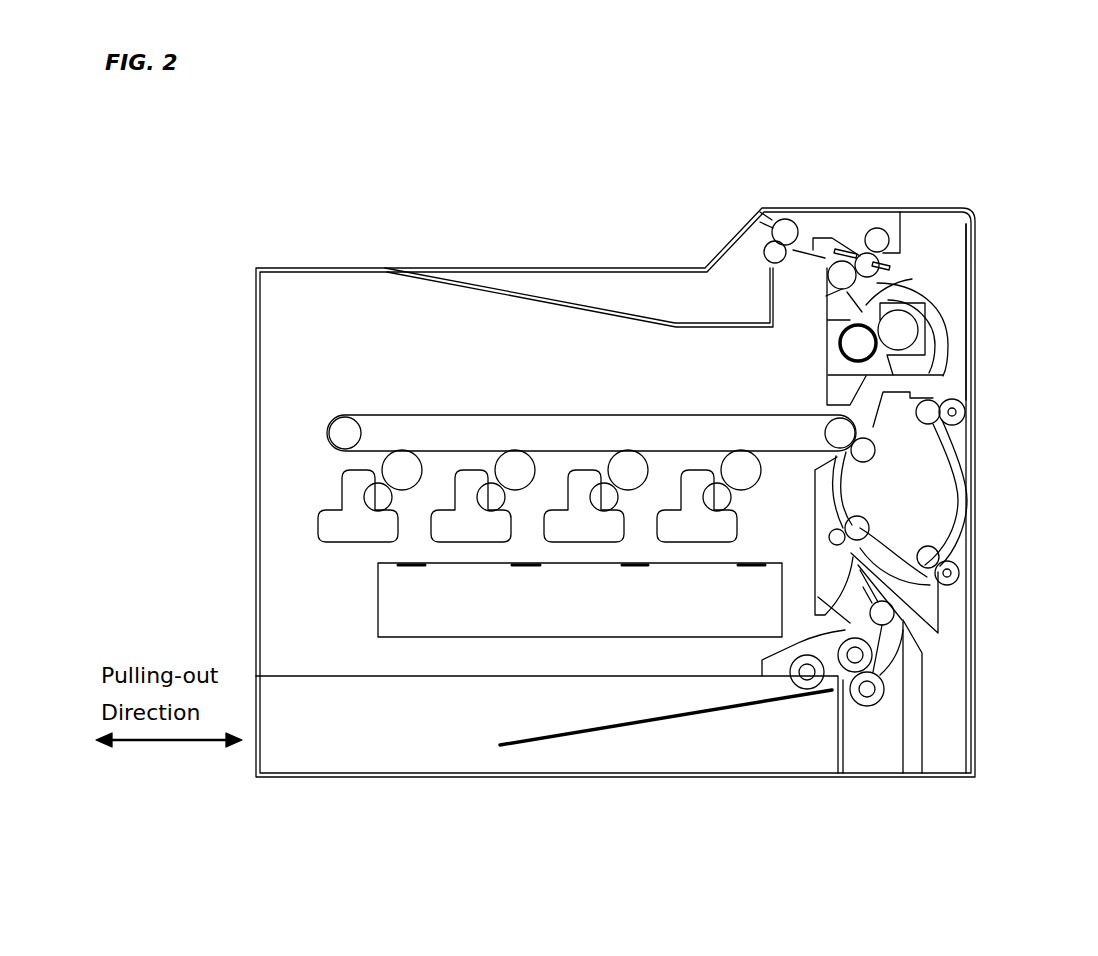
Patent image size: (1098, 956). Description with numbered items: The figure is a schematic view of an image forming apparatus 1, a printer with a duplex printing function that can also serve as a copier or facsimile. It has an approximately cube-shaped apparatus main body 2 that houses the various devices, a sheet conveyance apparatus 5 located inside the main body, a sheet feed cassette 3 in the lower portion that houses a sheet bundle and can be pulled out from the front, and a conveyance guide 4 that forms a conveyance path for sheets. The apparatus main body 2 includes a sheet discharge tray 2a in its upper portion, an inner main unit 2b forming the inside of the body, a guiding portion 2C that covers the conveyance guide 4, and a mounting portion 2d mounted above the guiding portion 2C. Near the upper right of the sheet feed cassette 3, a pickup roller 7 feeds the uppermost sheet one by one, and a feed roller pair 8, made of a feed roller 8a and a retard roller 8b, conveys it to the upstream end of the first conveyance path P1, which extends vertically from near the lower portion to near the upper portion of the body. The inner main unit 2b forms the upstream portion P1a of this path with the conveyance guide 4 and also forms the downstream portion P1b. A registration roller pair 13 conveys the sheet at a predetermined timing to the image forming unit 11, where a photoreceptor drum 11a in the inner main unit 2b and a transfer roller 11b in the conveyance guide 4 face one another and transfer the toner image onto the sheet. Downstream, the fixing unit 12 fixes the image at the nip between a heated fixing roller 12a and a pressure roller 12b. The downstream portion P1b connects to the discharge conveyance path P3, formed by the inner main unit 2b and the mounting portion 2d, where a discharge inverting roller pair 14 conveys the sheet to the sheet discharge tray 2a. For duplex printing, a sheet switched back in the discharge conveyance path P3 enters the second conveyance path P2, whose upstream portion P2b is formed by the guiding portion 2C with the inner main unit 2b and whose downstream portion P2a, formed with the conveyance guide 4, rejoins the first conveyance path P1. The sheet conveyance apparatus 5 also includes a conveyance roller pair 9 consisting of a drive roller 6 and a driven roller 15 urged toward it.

The image forming apparatus 1 is at (963, 144).
The apparatus main body 2 is at (809, 369).
The sheet discharge tray 2a is at (622, 305).
The inner main unit 2b is at (831, 362).
The guiding portion 2C is at (964, 434).
The mounting portion 2d is at (838, 209).
The sheet feed cassette 3 is at (372, 678).
The conveyance guide 4 is at (966, 470).
The sheet conveyance apparatus 5 is at (879, 228).
The drive roller 6 is at (884, 262).
The pickup roller 7 is at (790, 686).
The feed roller pair 8 is at (872, 712).
The feed roller 8a is at (830, 641).
The retard roller 8b is at (889, 703).
The conveyance roller pair 9 is at (1026, 166).
The image forming unit 11 is at (810, 428).
The photoreceptor drum 11a is at (826, 418).
The transfer roller 11b is at (880, 453).
The fixing unit 12 is at (922, 311).
The fixing roller 12a is at (846, 325).
The pressure roller 12b is at (945, 373).
The registration roller pair 13 is at (955, 588).
The discharge inverting roller pair 14 is at (775, 222).
The driven roller 15 is at (932, 212).
The first conveyance path P1 is at (833, 506).
The upstream portion of the first conveyance path P1a is at (853, 573).
The downstream portion of the first conveyance path P1b is at (946, 298).
The second conveyance path P2 is at (961, 521).
The downstream portion of the second conveyance path P2a is at (953, 541).
The upstream portion of the second conveyance path P2b is at (958, 337).
The discharge conveyance path P3 is at (808, 240).